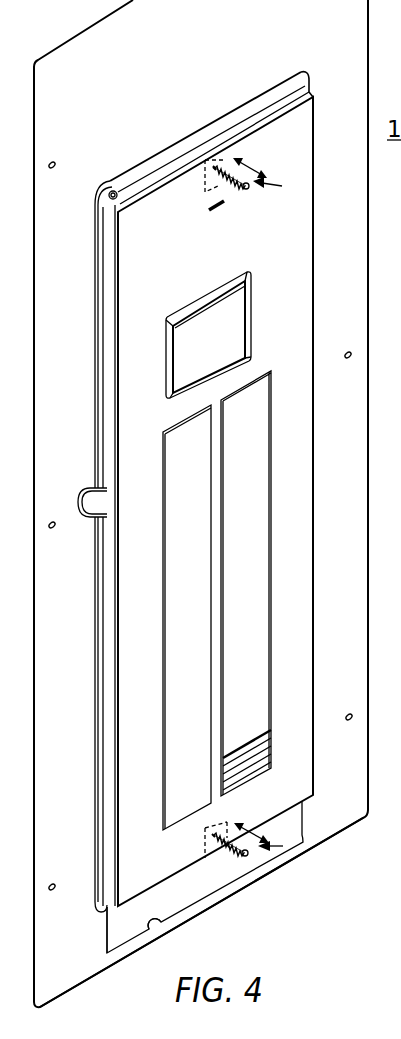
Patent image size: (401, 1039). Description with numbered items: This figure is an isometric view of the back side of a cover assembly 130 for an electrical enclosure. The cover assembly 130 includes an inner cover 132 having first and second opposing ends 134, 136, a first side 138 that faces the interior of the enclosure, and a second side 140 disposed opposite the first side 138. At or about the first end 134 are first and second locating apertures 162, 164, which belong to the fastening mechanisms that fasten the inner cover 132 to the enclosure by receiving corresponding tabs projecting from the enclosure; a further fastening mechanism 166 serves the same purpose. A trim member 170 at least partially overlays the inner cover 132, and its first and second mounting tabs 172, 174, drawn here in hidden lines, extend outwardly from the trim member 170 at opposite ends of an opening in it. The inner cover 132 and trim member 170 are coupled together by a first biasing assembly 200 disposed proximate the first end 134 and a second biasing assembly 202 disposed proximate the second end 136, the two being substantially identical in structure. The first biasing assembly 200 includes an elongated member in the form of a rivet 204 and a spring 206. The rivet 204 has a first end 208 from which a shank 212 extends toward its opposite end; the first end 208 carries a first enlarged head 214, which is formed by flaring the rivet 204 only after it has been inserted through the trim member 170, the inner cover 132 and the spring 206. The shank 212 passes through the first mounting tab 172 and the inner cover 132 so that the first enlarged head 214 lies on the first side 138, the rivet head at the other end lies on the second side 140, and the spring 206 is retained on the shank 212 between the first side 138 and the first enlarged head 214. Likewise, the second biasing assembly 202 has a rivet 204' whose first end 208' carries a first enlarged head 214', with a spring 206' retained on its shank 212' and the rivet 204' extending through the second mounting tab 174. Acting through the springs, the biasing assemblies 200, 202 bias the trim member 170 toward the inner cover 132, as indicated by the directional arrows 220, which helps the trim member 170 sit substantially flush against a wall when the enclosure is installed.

The cover assembly 130 is at (135, 998).
The inner cover 132 is at (165, 285).
The first end 134 is at (98, 944).
The second end 136 is at (82, 193).
The first side 138 is at (298, 296).
The second side 140 is at (133, 167).
The first locating aperture 162 is at (263, 857).
The second locating aperture 164 is at (158, 921).
The fastening mechanism 166 is at (213, 217).
The trim member 170 is at (115, 88).
The first mounting tab 172 is at (204, 838).
The second mounting tab 174 is at (200, 180).
The first biasing assembly 200 is at (208, 868).
The second biasing assembly 202 is at (240, 152).
The elongated member 204 is at (238, 887).
The rivet 204' is at (223, 115).
The spring 206 is at (208, 813).
The spring 206' is at (238, 205).
The first end 208 is at (304, 828).
The first end 208' is at (308, 189).
The shank 212 is at (207, 891).
The shank 212' is at (192, 204).
The first enlarged head 214 is at (265, 890).
The first enlarged head 214' is at (269, 204).
The directional arrows 220 is at (252, 167).